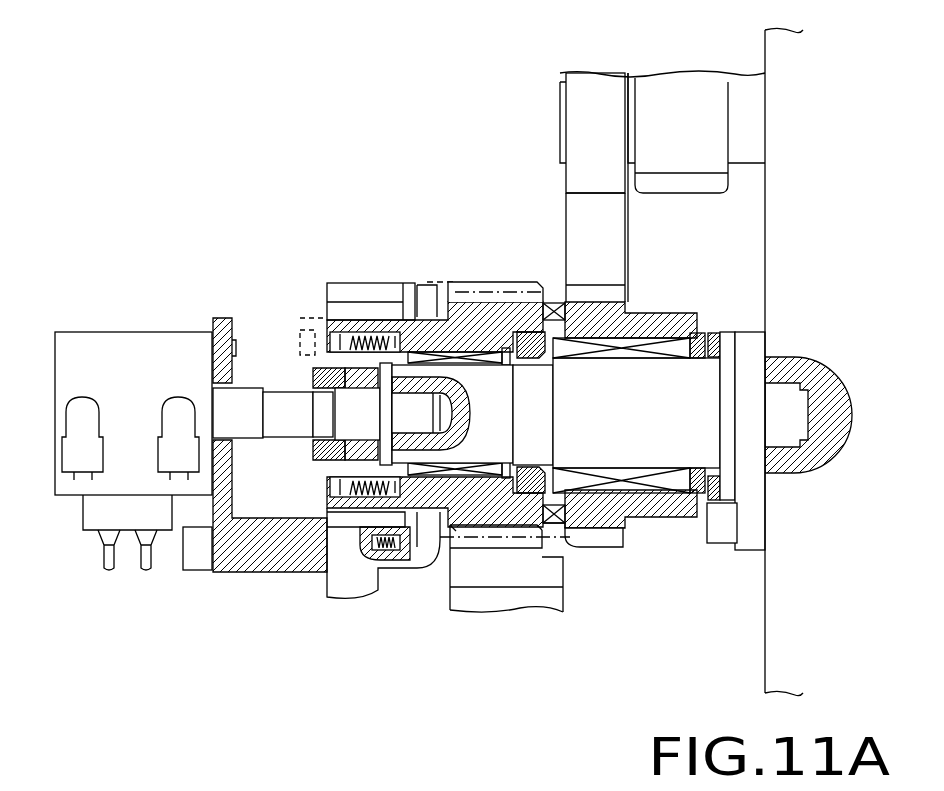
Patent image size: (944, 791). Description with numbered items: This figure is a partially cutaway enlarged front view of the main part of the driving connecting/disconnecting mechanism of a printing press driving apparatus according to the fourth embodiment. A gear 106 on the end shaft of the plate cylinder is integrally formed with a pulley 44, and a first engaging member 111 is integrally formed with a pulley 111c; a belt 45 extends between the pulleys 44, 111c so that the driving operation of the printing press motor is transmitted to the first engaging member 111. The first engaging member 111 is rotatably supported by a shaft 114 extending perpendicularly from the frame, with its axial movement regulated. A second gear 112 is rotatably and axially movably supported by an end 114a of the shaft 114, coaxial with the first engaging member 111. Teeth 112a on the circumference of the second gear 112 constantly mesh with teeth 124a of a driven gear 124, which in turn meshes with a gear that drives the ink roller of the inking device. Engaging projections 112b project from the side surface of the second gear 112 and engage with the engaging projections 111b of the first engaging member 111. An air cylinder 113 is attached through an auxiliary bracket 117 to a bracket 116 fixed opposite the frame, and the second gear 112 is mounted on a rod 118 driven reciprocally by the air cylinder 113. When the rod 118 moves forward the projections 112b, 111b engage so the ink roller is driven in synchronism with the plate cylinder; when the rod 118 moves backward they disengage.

The pulley 44 is at (578, 119).
The belt 45 is at (565, 222).
The gear 106 is at (668, 98).
The first engaging member 111 is at (677, 520).
The engaging projections 111b is at (550, 528).
The pulley 111c is at (610, 550).
The second gear 112 is at (437, 317).
The teeth 112a is at (490, 282).
The engaging projections 112b is at (555, 305).
The air cylinder 113 is at (118, 332).
The shaft 114 is at (705, 380).
The end of shaft 114a is at (470, 355).
The bracket 116 is at (320, 588).
The auxiliary bracket 117 is at (223, 575).
The rod 118 is at (276, 390).
The driven gear 124 is at (447, 575).
The teeth 124a is at (472, 533).